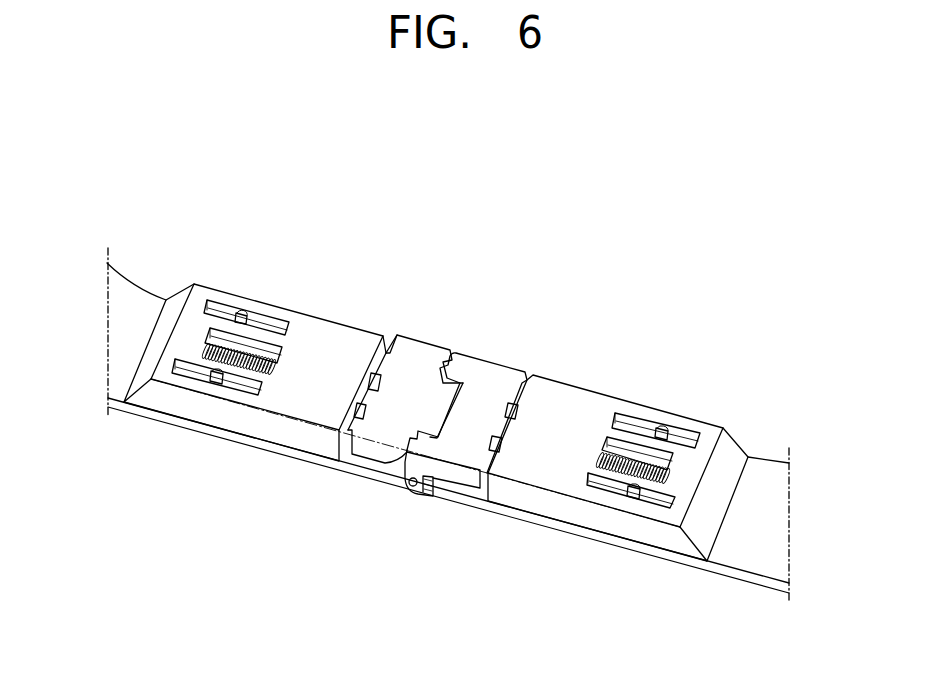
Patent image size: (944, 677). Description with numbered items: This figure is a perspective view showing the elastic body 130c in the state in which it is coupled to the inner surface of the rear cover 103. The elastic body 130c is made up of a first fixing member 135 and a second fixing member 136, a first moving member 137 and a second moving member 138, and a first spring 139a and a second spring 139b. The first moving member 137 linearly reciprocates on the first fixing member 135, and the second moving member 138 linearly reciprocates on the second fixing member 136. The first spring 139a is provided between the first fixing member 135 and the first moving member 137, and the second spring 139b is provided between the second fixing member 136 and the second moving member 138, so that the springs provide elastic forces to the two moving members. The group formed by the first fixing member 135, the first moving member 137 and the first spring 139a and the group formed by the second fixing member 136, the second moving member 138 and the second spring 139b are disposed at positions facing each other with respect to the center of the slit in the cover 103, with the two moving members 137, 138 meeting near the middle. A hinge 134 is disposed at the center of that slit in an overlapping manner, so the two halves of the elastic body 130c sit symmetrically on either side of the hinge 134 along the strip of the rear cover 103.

The rear cover 103 is at (137, 292).
The elastic body 130c is at (583, 283).
The hinge 134 is at (408, 496).
The first fixing member 135 is at (338, 333).
The second fixing member 136 is at (567, 396).
The first moving member 137 is at (415, 350).
The second moving member 138 is at (487, 368).
The first spring 139a is at (254, 352).
The second spring 139b is at (628, 457).